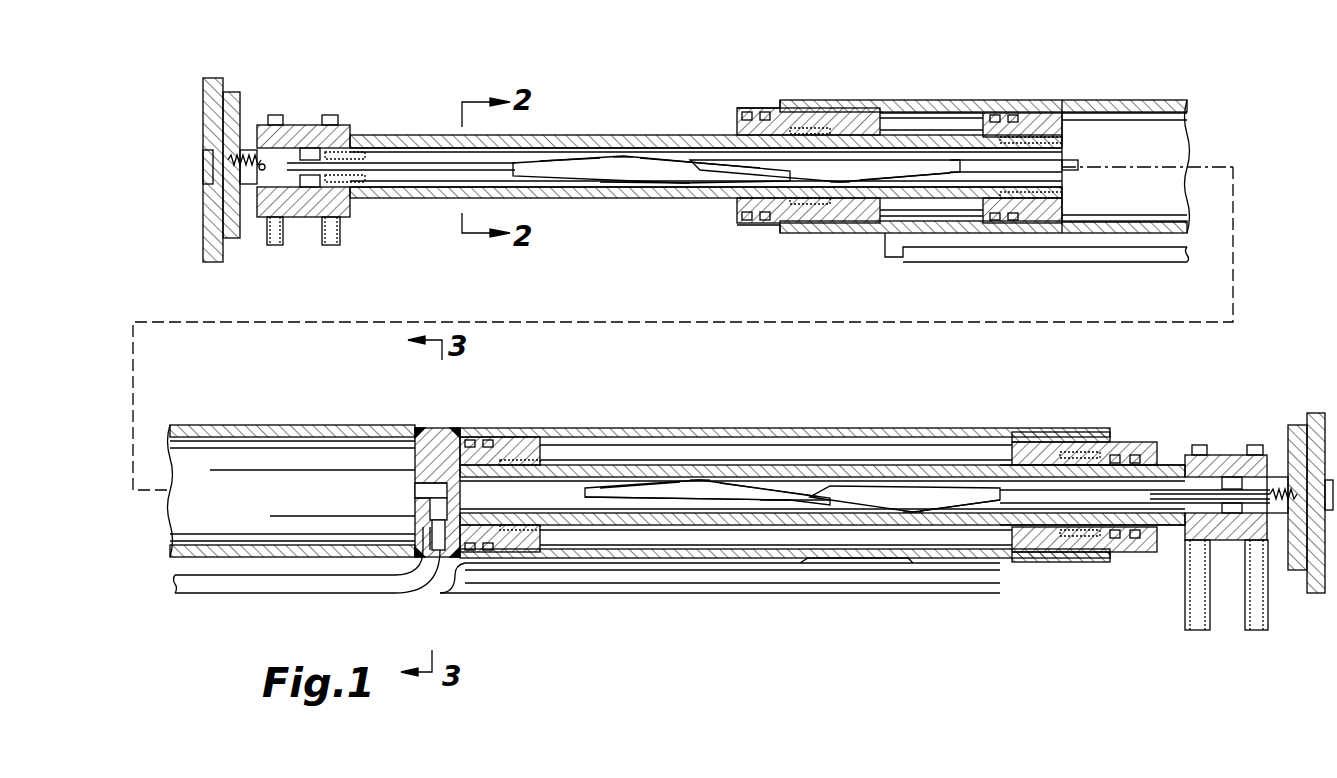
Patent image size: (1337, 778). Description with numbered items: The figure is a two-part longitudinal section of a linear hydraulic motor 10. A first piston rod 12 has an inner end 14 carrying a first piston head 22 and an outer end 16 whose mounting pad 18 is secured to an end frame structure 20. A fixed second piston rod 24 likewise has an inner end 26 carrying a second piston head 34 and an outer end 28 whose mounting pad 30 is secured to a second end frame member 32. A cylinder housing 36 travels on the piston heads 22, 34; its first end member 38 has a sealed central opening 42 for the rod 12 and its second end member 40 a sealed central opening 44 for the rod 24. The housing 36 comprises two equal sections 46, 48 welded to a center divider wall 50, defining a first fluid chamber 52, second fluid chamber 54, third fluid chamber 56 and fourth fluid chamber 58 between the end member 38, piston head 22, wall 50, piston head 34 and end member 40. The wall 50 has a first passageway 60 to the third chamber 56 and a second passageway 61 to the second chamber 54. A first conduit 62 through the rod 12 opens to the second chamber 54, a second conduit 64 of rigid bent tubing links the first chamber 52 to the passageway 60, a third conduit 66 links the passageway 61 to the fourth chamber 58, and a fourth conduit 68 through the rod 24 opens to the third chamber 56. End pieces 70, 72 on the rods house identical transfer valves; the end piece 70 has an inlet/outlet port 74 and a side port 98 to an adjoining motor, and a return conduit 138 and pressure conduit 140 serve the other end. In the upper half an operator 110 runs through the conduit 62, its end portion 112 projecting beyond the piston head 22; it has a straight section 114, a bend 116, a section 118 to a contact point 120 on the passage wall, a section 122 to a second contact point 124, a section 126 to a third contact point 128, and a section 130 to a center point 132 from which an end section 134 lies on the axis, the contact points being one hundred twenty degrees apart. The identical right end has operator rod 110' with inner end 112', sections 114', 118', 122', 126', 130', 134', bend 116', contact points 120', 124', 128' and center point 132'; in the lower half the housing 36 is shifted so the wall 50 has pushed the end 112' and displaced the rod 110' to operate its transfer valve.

The linear hydraulic motor 10 is at (562, 568).
The first piston rod 12 is at (610, 198).
The inner end 14 is at (1067, 192).
The outer end 16 is at (250, 132).
The mounting pad 18 is at (238, 230).
The end frame structure 20 is at (205, 240).
The first piston head 22 is at (1010, 215).
The second piston rod 24 is at (949, 525).
The inner end 26 is at (500, 518).
The outer end 28 is at (1268, 468).
The mounting pad 30 is at (1288, 443).
The second end frame member 32 is at (1320, 593).
The second piston head 34 is at (522, 445).
The cylinder housing 36 is at (345, 430).
The first end member 38 is at (770, 226).
The second end member 40 is at (1120, 560).
The central opening 42 is at (865, 125).
The central opening 44 is at (1033, 547).
The cylinder housing section 46 is at (215, 430).
The cylinder housing section 48 is at (745, 452).
The center divider wall 50 is at (418, 520).
The first fluid chamber 52 is at (928, 120).
The second fluid chamber 54 is at (1130, 133).
The third fluid chamber 56 is at (440, 432).
The fourth fluid chamber 58 is at (865, 450).
The first passageway 60 is at (443, 535).
The second passageway 61 is at (415, 486).
The first conduit 62 is at (440, 176).
The second conduit 64 is at (1150, 258).
The third conduit 66 is at (890, 595).
The fourth conduit 68 is at (745, 498).
The end piece 70 is at (348, 138).
The end piece 72 is at (1178, 465).
The port 74 is at (330, 235).
The side port 98 is at (275, 232).
The operator 110 is at (651, 121).
The end portion 112 is at (1039, 136).
The straight section 114 is at (706, 109).
The bend 116 is at (706, 225).
The section 118 is at (585, 119).
The contact point 120 is at (637, 97).
The section 122 is at (648, 219).
The second contact point 124 is at (700, 113).
The section 126 is at (825, 224).
The third contact point 128 is at (867, 240).
The section 130 is at (910, 239).
The point 132 is at (1006, 85).
The end section 134 is at (1045, 222).
The conduit 138 is at (1185, 612).
The conduit 140 is at (1252, 612).
The operator rod 110' is at (687, 571).
The inner end 112' is at (500, 424).
The straight section 114' is at (1092, 447).
The bend 116' is at (1086, 416).
The section 118' is at (966, 584).
The contact point 120' is at (929, 446).
The section 122' is at (905, 583).
The second contact point 124' is at (807, 574).
The section 126' is at (781, 436).
The third contact point 128' is at (731, 412).
The section 130' is at (648, 432).
The point 132' is at (707, 563).
The end section 134' is at (536, 465).